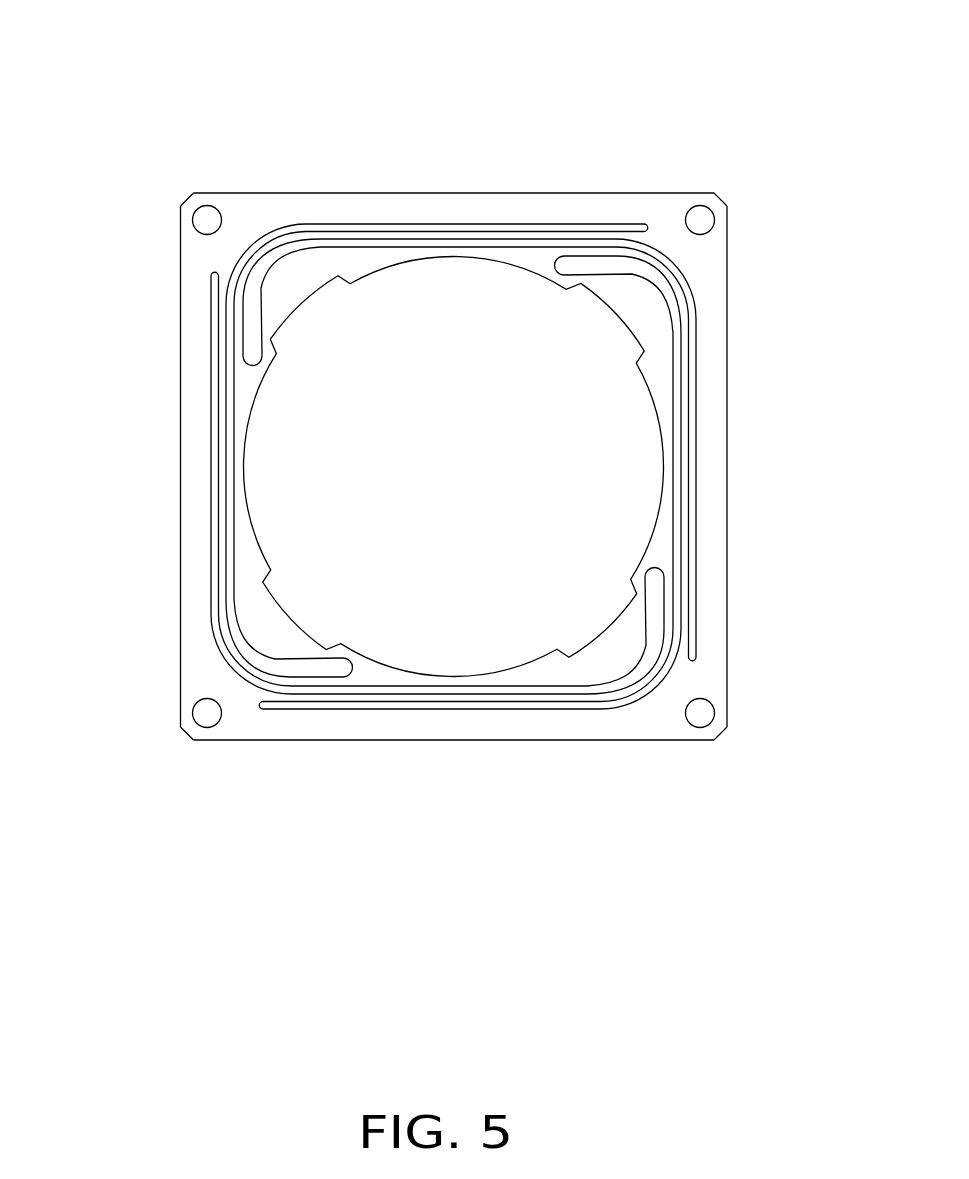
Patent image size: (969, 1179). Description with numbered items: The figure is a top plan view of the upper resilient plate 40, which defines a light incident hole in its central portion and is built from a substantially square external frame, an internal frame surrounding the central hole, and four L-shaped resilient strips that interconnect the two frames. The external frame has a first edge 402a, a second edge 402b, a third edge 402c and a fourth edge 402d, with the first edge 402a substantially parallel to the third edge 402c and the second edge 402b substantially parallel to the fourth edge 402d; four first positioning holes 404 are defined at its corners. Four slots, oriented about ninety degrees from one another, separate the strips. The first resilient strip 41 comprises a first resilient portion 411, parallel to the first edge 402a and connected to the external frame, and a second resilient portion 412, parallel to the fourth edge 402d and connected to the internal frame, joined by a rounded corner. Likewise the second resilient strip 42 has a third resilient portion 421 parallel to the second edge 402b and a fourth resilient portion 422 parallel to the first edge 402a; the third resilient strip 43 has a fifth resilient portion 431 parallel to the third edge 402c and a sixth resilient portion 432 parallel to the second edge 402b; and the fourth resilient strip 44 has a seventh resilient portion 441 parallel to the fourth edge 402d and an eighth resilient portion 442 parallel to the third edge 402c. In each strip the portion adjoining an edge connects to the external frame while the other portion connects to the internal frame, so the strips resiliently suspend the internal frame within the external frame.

The upper resilient plate 40 is at (458, 439).
The first edge 402a is at (728, 492).
The second edge 402b is at (365, 742).
The third edge 402c is at (180, 410).
The fourth edge 402d is at (483, 193).
The first positioning holes 404 is at (700, 218).
The first resilient strip 41 is at (566, 481).
The first resilient portion 411 is at (683, 387).
The second resilient portion 412 is at (626, 257).
The second resilient strip 42 is at (437, 572).
The third resilient portion 421 is at (512, 698).
The fourth resilient portion 422 is at (657, 655).
The third resilient strip 43 is at (345, 454).
The fifth resilient portion 431 is at (228, 548).
The sixth resilient portion 432 is at (288, 685).
The fourth resilient strip 44 is at (467, 368).
The seventh resilient portion 441 is at (374, 238).
The eighth resilient portion 442 is at (245, 296).